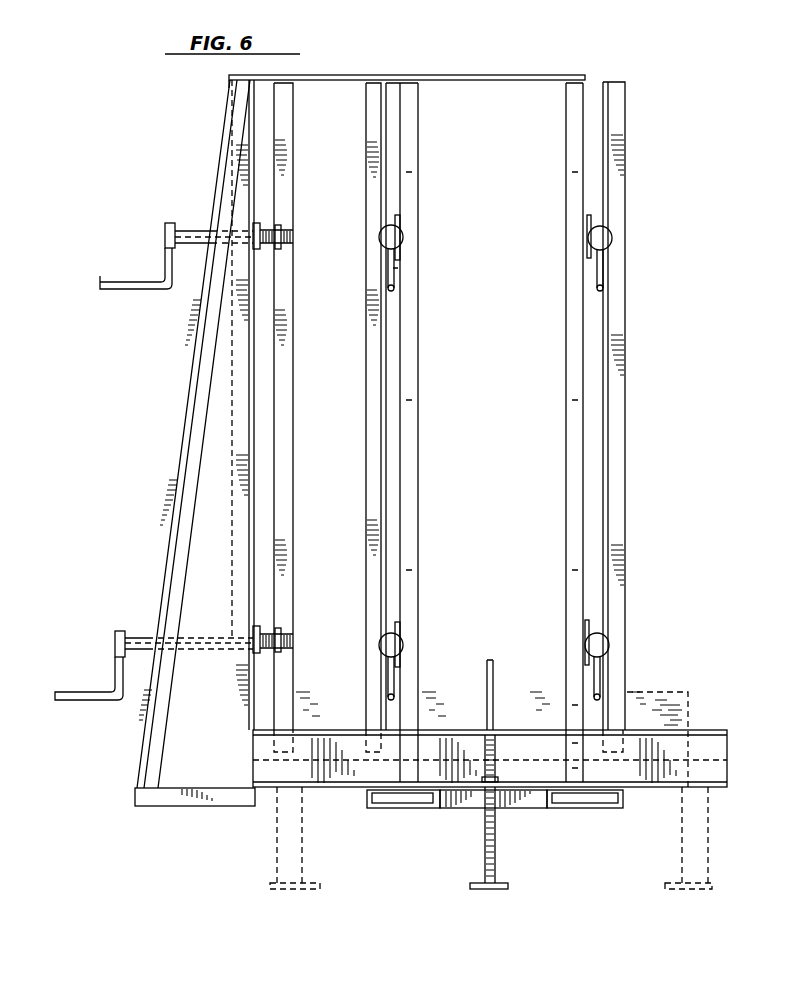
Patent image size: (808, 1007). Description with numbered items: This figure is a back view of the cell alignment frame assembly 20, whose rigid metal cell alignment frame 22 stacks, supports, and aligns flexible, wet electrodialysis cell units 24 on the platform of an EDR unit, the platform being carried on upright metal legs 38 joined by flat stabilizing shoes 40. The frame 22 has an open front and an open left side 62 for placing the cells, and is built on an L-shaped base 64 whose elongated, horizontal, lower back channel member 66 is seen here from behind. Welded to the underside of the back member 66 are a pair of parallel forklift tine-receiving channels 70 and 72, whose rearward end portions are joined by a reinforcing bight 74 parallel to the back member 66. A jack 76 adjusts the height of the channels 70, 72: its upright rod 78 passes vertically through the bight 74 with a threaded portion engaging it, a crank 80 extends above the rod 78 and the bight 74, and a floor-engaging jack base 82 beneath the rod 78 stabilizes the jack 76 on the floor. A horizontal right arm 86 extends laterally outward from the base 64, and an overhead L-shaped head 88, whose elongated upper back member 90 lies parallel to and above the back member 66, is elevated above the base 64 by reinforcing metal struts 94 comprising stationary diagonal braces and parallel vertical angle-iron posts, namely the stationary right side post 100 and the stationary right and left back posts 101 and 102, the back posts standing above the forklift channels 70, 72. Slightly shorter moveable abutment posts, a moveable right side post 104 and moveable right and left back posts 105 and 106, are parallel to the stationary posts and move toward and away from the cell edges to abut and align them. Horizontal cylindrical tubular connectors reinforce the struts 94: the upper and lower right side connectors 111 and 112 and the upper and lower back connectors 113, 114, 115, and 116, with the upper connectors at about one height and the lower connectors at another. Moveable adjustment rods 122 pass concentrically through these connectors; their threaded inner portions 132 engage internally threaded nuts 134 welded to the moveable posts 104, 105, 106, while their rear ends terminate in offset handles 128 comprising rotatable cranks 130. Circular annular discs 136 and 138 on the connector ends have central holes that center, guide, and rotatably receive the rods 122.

The cell alignment frame assembly 20 is at (623, 71).
The cell alignment frame 22 is at (229, 77).
The electrodialysis cell units 24 is at (648, 690).
The legs 38 is at (712, 845).
The stabilizing shoes 40 is at (675, 883).
The open left side 62 is at (666, 468).
The L-shaped base 64 is at (253, 766).
The back channel member 66 is at (727, 740).
The forklift tine-receiving channel 70 is at (588, 808).
The forklift tine-receiving channel 72 is at (404, 808).
The bight 74 is at (520, 808).
The jack 76 is at (485, 843).
The upright rod 78 is at (498, 742).
The crank 80 is at (490, 660).
The jack base 82 is at (500, 889).
The right arm 86 is at (198, 808).
The L-shaped head 88 is at (326, 81).
The upper back member 90 is at (545, 75).
The reinforcing metal struts 94 is at (212, 129).
The stationary right side post 100 is at (233, 710).
The stationary right back post 101 is at (418, 303).
The stationary left back post 102 is at (566, 392).
The moveable right side post 104 is at (293, 325).
The moveable right back post 105 is at (366, 430).
The moveable left back post 106 is at (625, 380).
The upper right side connector 111 is at (190, 230).
The lower right side connector 112 is at (138, 636).
The upper right back connector 113 is at (403, 237).
The lower right back connector 114 is at (403, 645).
The upper left back connector 115 is at (612, 240).
The lower left back connector 116 is at (609, 645).
The moveable adjustment rods 122 is at (260, 230).
The handle 128 is at (128, 282).
The rotatable crank 130 is at (60, 692).
The threaded inner portion 132 is at (262, 633).
The nut 134 is at (264, 650).
The annular disc 136 is at (262, 248).
The annular disc 138 is at (125, 655).